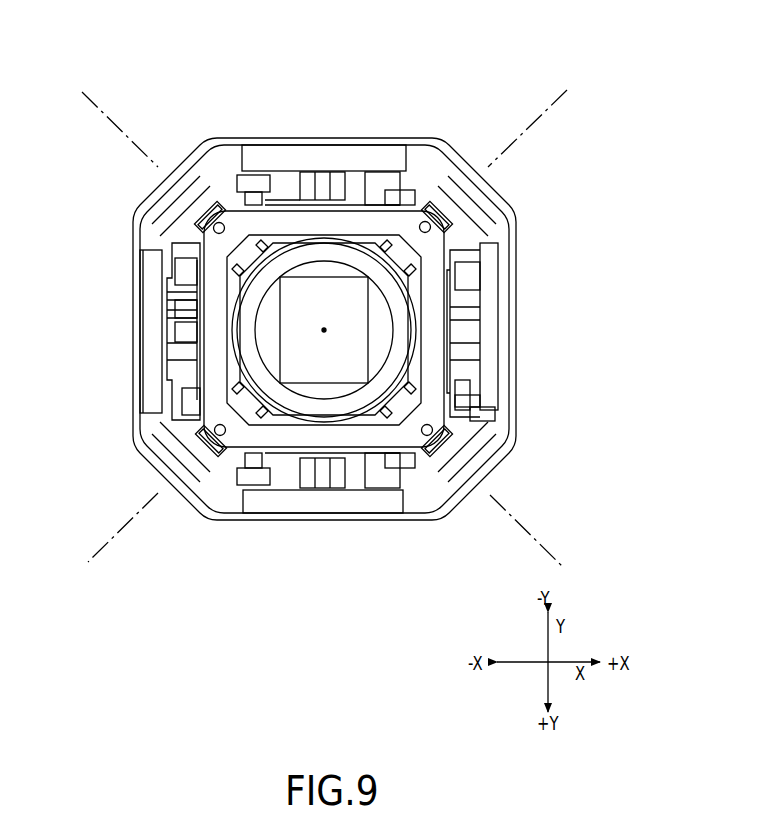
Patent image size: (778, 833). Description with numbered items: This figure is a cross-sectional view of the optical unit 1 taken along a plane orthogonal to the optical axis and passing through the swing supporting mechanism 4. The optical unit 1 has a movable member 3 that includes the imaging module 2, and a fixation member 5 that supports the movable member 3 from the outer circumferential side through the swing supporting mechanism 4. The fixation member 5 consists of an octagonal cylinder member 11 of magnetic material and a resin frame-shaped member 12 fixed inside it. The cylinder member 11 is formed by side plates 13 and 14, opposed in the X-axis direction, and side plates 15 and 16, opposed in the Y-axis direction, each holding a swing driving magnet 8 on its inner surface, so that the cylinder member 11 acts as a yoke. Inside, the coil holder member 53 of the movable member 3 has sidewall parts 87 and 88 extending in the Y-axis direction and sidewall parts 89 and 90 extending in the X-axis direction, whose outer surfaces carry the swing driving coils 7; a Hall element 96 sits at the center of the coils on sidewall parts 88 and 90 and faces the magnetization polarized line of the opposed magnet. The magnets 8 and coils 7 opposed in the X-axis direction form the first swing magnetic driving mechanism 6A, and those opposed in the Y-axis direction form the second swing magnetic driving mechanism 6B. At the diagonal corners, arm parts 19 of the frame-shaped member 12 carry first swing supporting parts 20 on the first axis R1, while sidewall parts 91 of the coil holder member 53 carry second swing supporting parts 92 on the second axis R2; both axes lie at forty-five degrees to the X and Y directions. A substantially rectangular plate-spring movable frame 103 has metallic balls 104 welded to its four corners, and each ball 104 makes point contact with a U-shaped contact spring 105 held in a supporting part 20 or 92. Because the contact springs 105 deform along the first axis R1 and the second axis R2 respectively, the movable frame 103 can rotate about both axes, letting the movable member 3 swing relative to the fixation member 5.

The optical unit 1 is at (566, 47).
The imaging module 2 is at (360, 263).
The movable member 3 is at (348, 197).
The swing supporting mechanism 4 is at (433, 302).
The fixation member 5 is at (546, 415).
The first swing magnetic driving mechanism 6A is at (83, 355).
The second swing magnetic driving mechanism 6B is at (285, 99).
The swing driving coil 7 is at (180, 393).
The swing driving magnet 8 is at (148, 363).
The cylinder member 11 is at (480, 407).
The frame-shaped member 12 is at (492, 425).
The side plate 13 is at (515, 262).
The side plate 14 is at (140, 310).
The side plate 15 is at (325, 522).
The side plate 16 is at (310, 143).
The arm part 19 is at (190, 185).
The first swing supporting part 20 is at (212, 200).
The coil holder member 53 is at (413, 293).
The sidewall part 87 is at (457, 308).
The sidewall part 88 is at (173, 285).
The sidewall part 89 is at (357, 480).
The sidewall part 90 is at (363, 177).
The sidewall part 91 is at (443, 202).
The second swing supporting part 92 is at (448, 210).
The Hall element 96 is at (177, 332).
The movable frame 103 is at (218, 500).
The ball 104 is at (200, 218).
The contact spring 105 is at (205, 228).
The first axis R1 is at (100, 102).
The second axis R2 is at (567, 95).